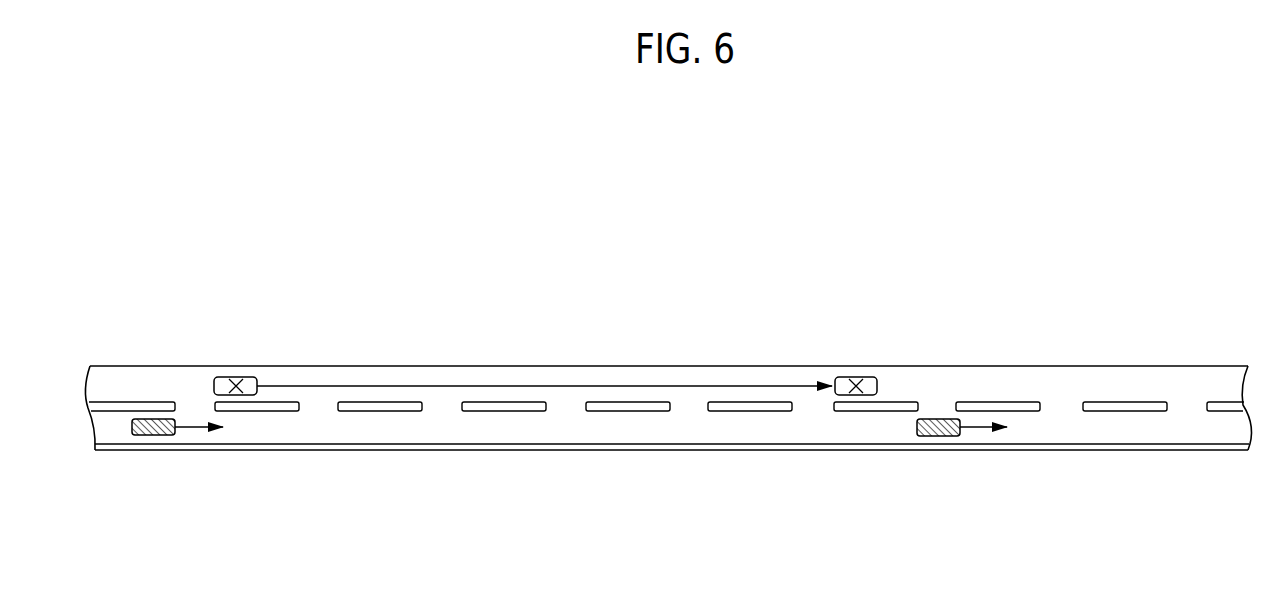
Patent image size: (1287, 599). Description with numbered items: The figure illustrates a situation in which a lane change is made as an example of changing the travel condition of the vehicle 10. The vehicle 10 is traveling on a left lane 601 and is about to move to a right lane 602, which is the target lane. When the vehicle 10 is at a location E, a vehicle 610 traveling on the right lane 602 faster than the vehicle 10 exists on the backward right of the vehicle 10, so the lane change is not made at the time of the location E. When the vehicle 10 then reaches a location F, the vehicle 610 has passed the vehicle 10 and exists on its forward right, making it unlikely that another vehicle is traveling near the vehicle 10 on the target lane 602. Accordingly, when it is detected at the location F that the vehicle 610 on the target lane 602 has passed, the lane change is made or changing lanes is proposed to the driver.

The left lane 601 is at (117, 380).
The right lane 602 is at (113, 428).
The vehicle 10 is at (247, 380).
The vehicle 610 is at (160, 437).
The location E is at (238, 382).
The location F is at (855, 380).